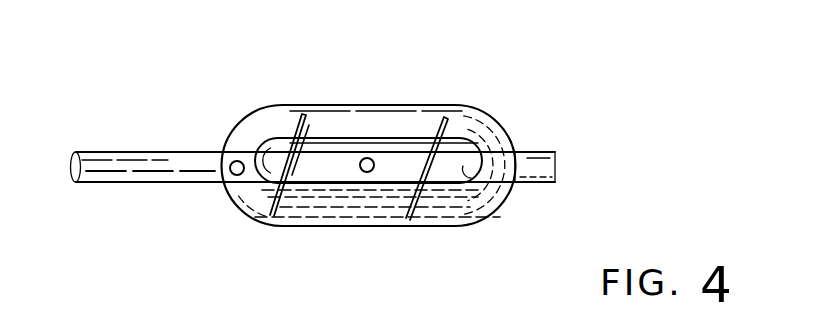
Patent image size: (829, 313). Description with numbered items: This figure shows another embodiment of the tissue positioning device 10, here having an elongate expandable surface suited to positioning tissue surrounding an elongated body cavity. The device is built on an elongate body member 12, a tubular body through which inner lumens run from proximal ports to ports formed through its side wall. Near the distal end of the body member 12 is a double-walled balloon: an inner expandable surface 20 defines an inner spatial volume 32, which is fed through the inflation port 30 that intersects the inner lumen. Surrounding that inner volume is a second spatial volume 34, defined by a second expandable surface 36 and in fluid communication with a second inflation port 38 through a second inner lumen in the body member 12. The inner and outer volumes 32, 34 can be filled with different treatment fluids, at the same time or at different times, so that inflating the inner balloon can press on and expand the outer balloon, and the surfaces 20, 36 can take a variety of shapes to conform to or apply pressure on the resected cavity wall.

The tissue positioning device 10 is at (92, 85).
The elongate body member 12 is at (137, 186).
The expandable surface 20 is at (322, 136).
The inflation port 30 is at (368, 156).
The spatial volume 32 is at (441, 182).
The second spatial volume 34 is at (332, 218).
The second expandable surface 36 is at (445, 106).
The second inflation port 38 is at (230, 140).